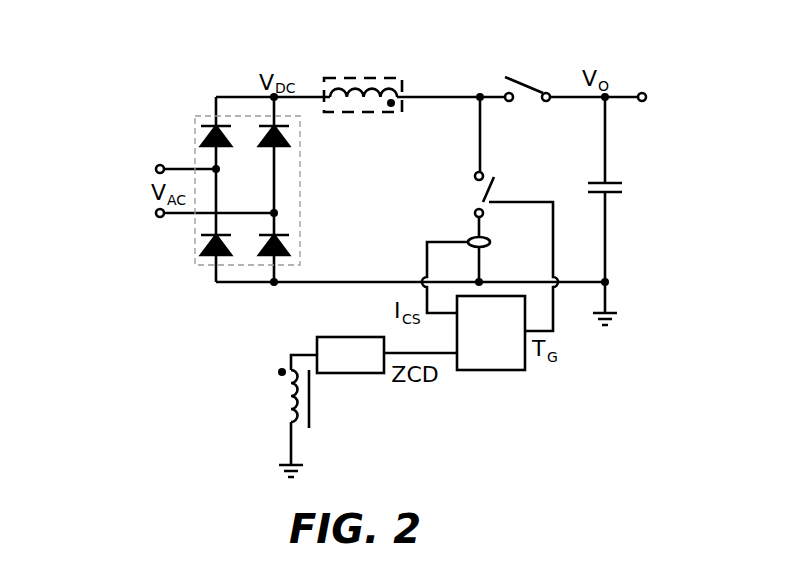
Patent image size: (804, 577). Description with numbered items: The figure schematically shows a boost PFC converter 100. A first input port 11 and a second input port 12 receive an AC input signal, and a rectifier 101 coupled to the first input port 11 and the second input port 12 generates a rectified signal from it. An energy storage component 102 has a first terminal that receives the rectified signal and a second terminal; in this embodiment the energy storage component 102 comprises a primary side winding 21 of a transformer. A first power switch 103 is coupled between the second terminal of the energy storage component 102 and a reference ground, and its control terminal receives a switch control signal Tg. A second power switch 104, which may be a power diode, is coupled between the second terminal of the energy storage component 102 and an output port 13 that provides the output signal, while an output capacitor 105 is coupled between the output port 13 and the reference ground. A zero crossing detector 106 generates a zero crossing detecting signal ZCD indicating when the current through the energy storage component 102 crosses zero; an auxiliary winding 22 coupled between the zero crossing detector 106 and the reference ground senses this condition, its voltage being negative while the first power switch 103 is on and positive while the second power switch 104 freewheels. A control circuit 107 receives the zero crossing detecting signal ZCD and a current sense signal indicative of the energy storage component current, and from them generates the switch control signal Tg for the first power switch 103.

The boost PFC converter 100 is at (185, 58).
The first input port 11 is at (159, 165).
The second input port 12 is at (159, 219).
The output port 13 is at (644, 92).
The primary side winding 21 is at (368, 88).
The auxiliary winding 22 is at (284, 412).
The rectifier 101 is at (297, 223).
The energy storage component 102 is at (359, 117).
The first power switch 103 is at (470, 201).
The second power switch 104 is at (524, 104).
The output capacitor 105 is at (612, 198).
The zero crossing detector 106 is at (350, 355).
The control circuit 107 is at (491, 333).